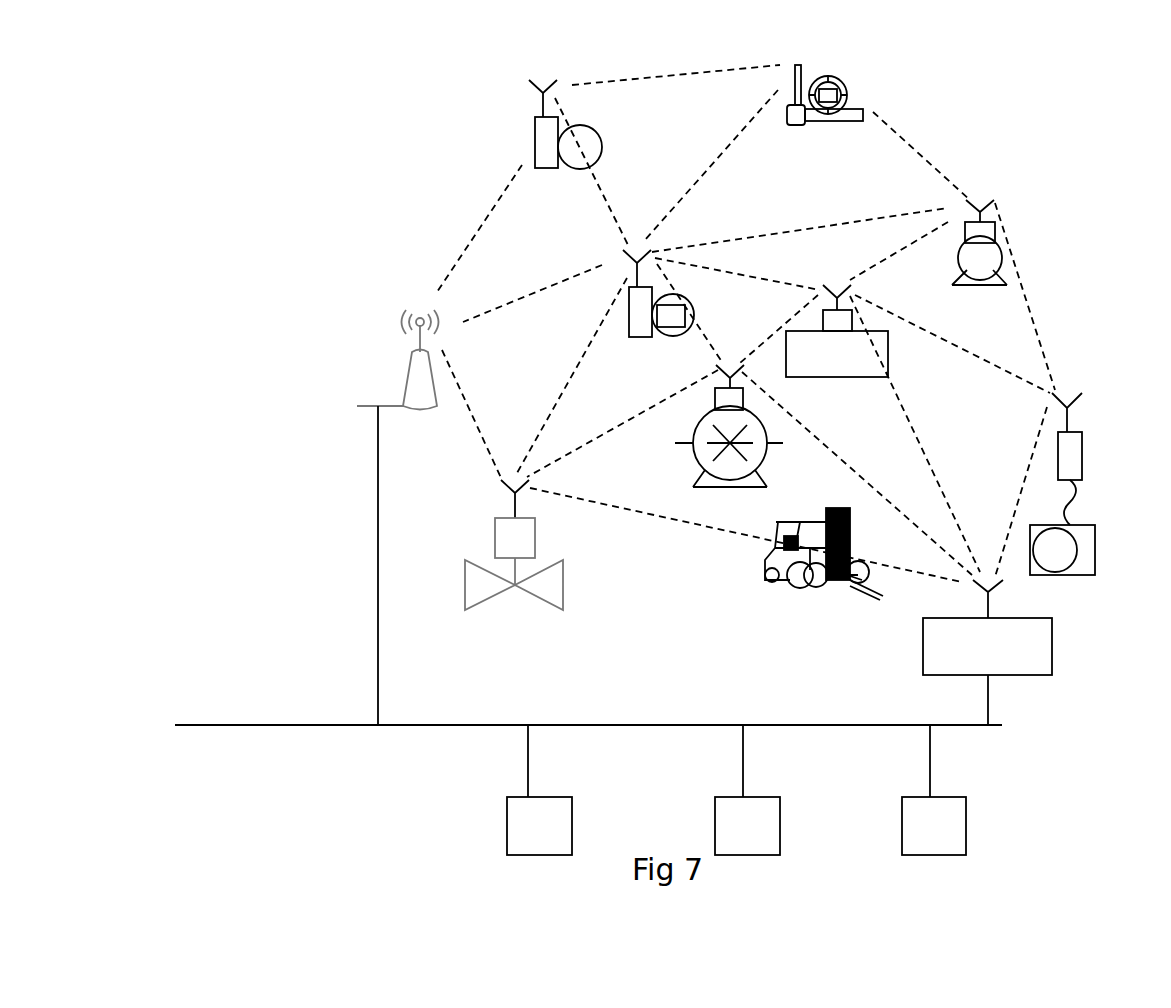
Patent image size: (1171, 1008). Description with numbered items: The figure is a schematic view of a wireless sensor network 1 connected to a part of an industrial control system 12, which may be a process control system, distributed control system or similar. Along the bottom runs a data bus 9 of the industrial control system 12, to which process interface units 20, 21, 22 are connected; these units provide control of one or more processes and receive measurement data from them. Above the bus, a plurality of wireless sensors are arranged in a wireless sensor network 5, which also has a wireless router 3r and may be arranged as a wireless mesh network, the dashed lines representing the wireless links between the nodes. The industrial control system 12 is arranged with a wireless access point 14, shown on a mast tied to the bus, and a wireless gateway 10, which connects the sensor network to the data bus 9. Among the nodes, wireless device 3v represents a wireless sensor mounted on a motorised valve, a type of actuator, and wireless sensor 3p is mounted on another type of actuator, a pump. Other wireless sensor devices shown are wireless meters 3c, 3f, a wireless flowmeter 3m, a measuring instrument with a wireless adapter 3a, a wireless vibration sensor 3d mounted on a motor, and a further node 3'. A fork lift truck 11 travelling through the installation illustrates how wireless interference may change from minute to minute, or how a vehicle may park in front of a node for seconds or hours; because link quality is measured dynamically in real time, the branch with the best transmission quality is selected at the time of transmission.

The wireless sensor network 1 is at (417, 277).
The field device 3' is at (704, 105).
The measuring instrument with a wireless adapter 3a is at (1102, 525).
The wireless meter 3c is at (610, 307).
The wireless vibration sensor 3d is at (987, 252).
The wireless meter 3f is at (522, 145).
The wireless flowmeter 3m is at (872, 88).
The wireless sensor mounted on a pump 3p is at (775, 431).
The wireless router 3r is at (890, 343).
The wireless device on motorised valve 3v is at (477, 544).
The wireless sensor network 5 is at (487, 198).
The data bus 9 is at (588, 747).
The wireless gateway 10 is at (1065, 688).
The fork lift truck 11 is at (765, 587).
The industrial control system 12 is at (253, 130).
The wireless access point 14 is at (378, 352).
The process interface unit 20 is at (521, 790).
The process interface unit 21 is at (728, 790).
The process interface unit 22 is at (918, 790).